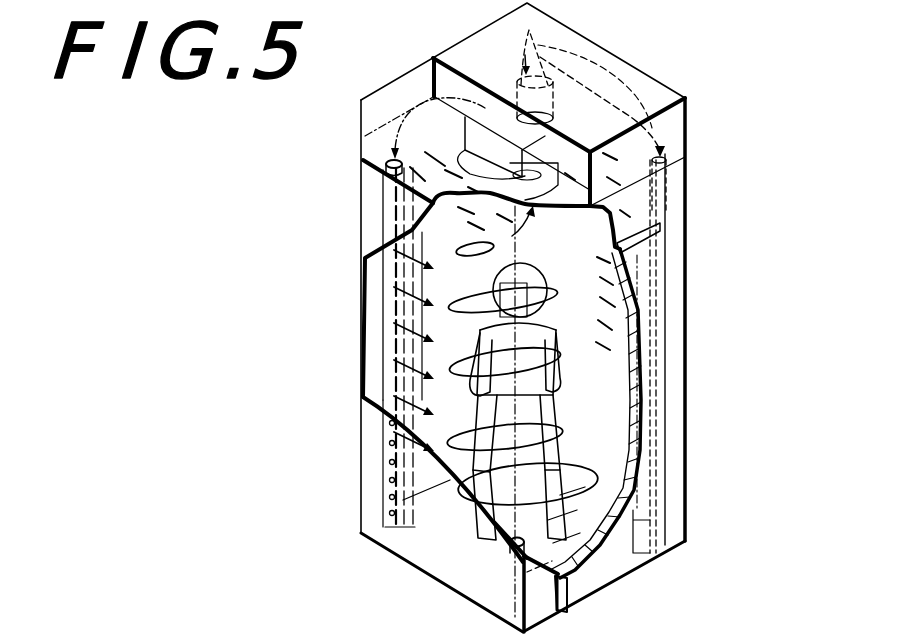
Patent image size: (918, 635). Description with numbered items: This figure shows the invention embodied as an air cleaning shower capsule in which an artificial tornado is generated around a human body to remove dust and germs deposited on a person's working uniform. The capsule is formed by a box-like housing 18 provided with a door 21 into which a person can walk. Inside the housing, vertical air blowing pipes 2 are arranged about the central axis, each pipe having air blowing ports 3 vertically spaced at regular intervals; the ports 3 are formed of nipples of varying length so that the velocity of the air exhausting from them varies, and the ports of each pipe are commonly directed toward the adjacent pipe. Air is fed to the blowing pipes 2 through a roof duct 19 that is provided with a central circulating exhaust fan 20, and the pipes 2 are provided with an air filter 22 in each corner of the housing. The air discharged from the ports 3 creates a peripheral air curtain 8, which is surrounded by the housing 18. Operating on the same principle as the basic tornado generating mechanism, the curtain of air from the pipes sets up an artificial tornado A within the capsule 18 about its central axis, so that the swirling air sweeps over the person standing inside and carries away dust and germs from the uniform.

The air blowing pipe 2 is at (388, 284).
The air blowing port 3 is at (397, 322).
The peripheral air curtain 8 is at (398, 366).
The box-like housing 18 is at (700, 203).
The roof duct 19 is at (663, 97).
The central circulating exhaust fan 20 is at (385, 190).
The door 21 is at (615, 560).
The air filter 22 is at (512, 543).
The artificial tornado A is at (640, 374).